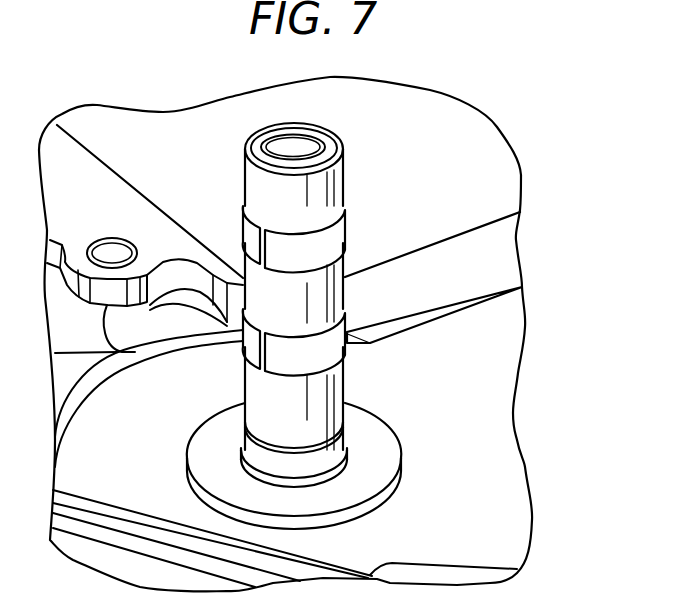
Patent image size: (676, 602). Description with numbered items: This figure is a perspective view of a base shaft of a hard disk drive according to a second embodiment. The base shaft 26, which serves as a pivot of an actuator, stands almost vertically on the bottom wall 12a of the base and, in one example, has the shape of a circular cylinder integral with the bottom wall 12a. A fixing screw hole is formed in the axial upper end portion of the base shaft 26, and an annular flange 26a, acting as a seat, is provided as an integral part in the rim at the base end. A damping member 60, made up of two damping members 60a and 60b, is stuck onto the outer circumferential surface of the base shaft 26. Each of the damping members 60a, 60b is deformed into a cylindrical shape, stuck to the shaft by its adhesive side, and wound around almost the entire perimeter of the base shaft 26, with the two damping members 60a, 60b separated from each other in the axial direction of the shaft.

The bottom wall 12a is at (512, 468).
The base shaft 26 is at (320, 184).
The annular flange 26a is at (363, 484).
The damping member 60 is at (363, 314).
The damping member 60a is at (336, 232).
The damping member 60b is at (332, 345).